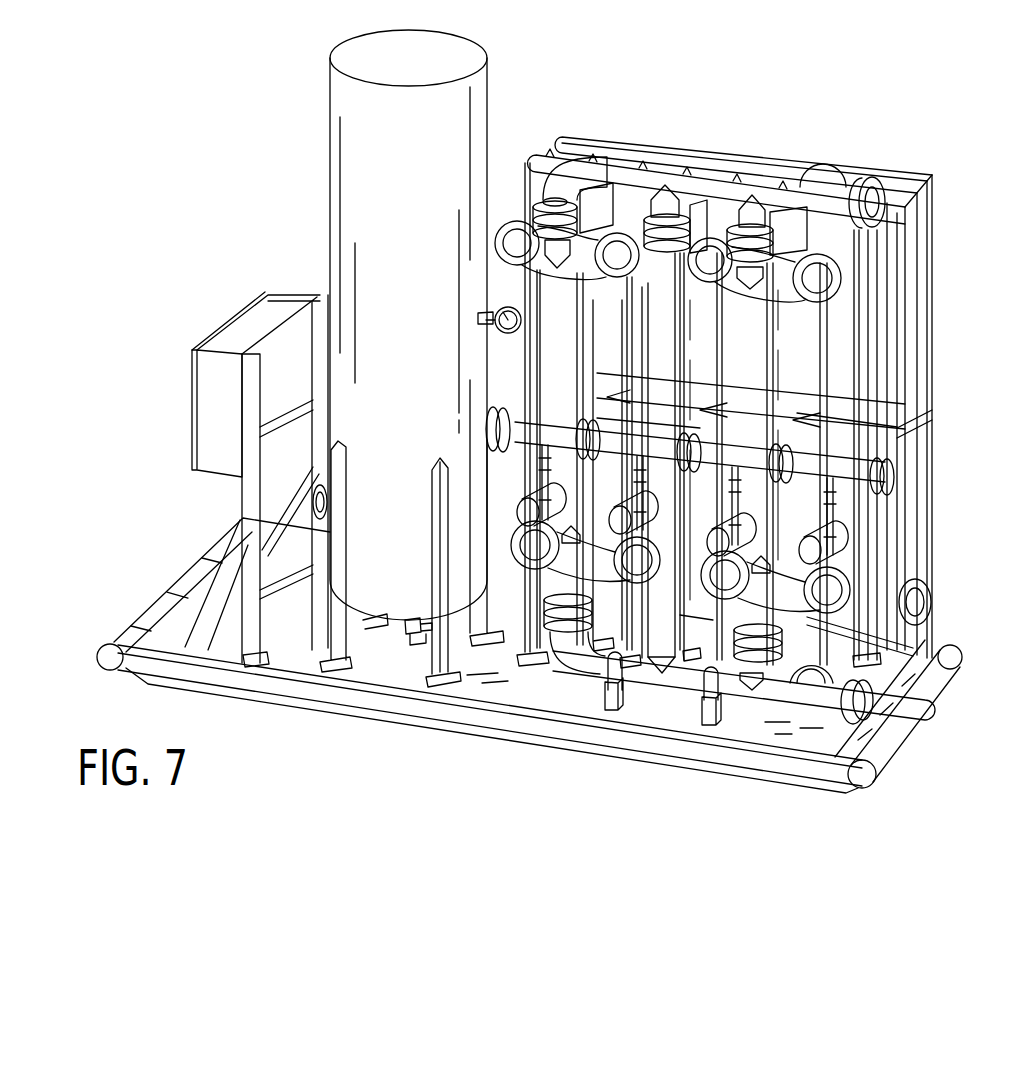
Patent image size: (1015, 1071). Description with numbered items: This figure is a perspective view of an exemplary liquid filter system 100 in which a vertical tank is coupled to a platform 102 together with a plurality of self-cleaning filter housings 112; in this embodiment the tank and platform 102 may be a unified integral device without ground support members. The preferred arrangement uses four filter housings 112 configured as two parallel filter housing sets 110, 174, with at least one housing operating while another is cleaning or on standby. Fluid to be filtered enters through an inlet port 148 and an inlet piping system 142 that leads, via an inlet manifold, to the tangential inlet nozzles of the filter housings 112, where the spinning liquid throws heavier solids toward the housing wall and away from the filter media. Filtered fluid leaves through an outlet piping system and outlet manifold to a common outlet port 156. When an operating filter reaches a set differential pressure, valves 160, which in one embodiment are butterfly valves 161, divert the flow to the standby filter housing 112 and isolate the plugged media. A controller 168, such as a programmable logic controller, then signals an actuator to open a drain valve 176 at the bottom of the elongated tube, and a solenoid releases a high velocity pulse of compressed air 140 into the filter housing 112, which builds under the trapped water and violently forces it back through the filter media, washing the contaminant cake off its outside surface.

The liquid filter system 100 is at (786, 72).
The platform 102 is at (680, 713).
The filter housing set 110 is at (882, 377).
The filter housing 112 is at (833, 368).
The compressed air 140 is at (356, 170).
The inlet piping system 142 is at (512, 202).
The inlet port 148 is at (853, 200).
The common outlet port 156 is at (870, 700).
The valve 160 is at (512, 208).
The butterfly valve 161 is at (695, 222).
The controller 168 is at (192, 417).
The filter housing set 174 is at (520, 366).
The drain valve 176 is at (409, 652).